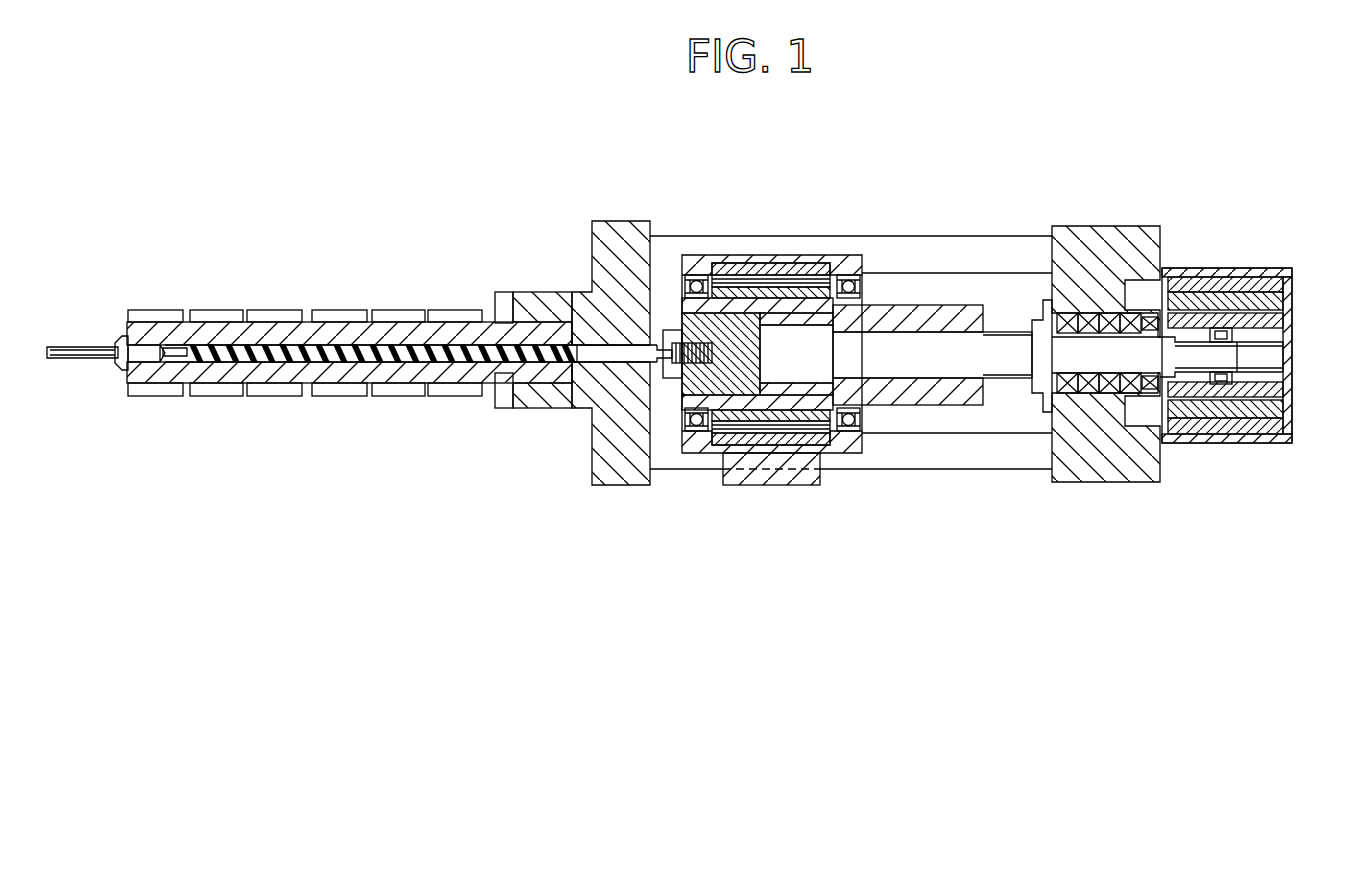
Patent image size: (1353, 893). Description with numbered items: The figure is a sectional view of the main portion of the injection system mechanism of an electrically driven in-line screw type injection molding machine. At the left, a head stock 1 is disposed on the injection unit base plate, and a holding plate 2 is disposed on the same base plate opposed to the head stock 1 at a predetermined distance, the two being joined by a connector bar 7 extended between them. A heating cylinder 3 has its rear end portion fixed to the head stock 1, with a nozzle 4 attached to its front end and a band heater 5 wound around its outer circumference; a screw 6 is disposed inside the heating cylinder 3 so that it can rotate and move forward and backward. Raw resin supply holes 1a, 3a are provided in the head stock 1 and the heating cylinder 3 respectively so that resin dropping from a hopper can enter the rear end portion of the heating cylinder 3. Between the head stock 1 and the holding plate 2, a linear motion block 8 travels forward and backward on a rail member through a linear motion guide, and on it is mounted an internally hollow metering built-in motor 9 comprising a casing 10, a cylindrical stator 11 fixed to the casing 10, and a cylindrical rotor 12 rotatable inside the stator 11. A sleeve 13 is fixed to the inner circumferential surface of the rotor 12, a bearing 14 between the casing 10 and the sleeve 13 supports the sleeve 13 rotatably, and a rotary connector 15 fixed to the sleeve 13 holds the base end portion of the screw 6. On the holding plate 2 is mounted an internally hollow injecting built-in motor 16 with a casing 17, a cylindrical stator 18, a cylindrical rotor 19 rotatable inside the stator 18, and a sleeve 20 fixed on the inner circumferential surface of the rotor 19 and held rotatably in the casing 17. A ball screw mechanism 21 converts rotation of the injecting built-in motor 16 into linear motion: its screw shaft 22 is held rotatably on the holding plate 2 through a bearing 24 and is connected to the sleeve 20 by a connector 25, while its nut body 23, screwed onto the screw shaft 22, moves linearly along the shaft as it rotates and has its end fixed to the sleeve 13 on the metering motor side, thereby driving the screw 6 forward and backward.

The head stock 1 is at (612, 221).
The raw resin supply hole 1a is at (547, 300).
The holding plate 2 is at (1095, 226).
The heating cylinder 3 is at (275, 330).
The raw resin supply hole 3a is at (550, 335).
The nozzle 4 is at (110, 347).
The band heater 5 is at (213, 313).
The screw 6 is at (345, 364).
The connector bar 7 is at (986, 236).
The linear motion block 8 is at (774, 485).
The metering built-in motor 9 is at (695, 183).
The casing 10 is at (703, 257).
The stator 11 is at (775, 265).
The rotor 12 is at (825, 280).
The sleeve 13 is at (683, 300).
The bearing 14 is at (862, 286).
The rotary connector 15 is at (683, 390).
The injecting built-in motor 16 is at (1158, 188).
The casing 17 is at (1192, 272).
The stator 18 is at (1225, 282).
The rotor 19 is at (1268, 292).
The sleeve 20 is at (1262, 328).
The ball screw mechanism 21 is at (1037, 503).
The screw shaft 22 is at (1008, 365).
The nut body 23 is at (940, 395).
The bearing 24 is at (1087, 395).
The connector 25 is at (1243, 372).